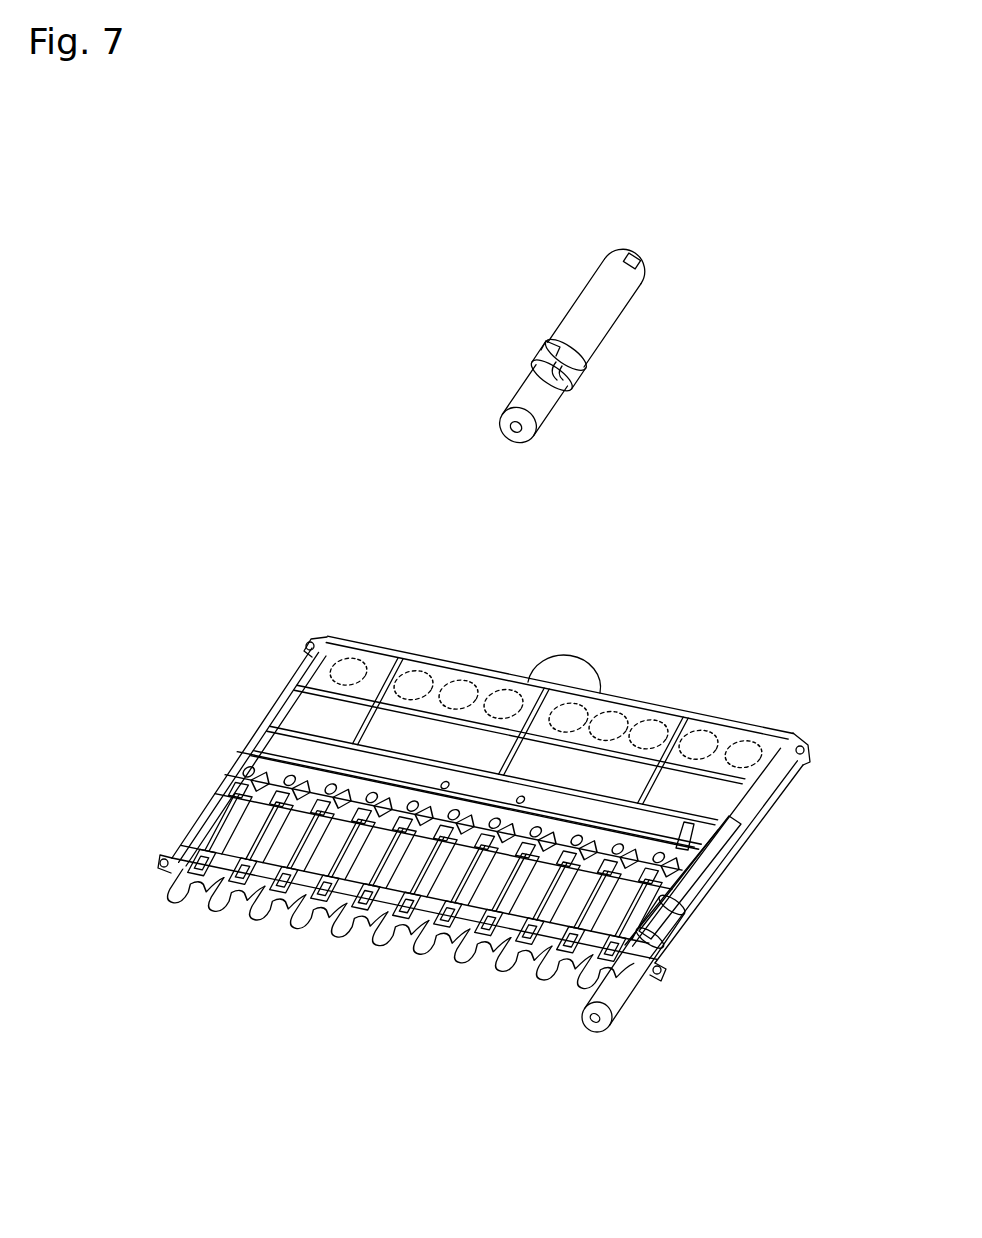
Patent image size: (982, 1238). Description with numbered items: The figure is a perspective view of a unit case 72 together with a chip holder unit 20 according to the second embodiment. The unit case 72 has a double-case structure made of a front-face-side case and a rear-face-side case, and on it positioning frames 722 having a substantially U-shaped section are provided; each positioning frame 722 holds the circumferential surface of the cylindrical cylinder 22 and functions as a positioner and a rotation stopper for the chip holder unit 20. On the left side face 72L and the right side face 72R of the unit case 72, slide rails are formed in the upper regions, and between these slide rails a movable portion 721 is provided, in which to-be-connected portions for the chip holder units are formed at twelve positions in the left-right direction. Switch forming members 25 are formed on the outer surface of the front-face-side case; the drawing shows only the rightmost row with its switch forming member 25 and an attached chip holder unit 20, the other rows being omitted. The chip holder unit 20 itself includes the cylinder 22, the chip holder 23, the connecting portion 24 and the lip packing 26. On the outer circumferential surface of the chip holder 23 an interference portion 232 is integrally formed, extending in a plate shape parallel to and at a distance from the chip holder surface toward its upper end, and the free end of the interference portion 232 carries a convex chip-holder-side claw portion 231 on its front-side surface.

The chip holder unit 20 is at (631, 328).
The cylinder 22 is at (586, 302).
The chip holder 23 is at (527, 392).
The chip-holder-side claw portion 231 is at (542, 348).
The interference portion 232 is at (566, 376).
The connecting portion 24 is at (645, 258).
The lip packing 26 is at (505, 404).
The unit case 72 is at (430, 732).
The left side face 72L is at (270, 702).
The right side face 72R is at (745, 818).
The movable portion 721 is at (728, 722).
The positioning frame 722 is at (183, 878).
The switch forming member 25 is at (642, 918).